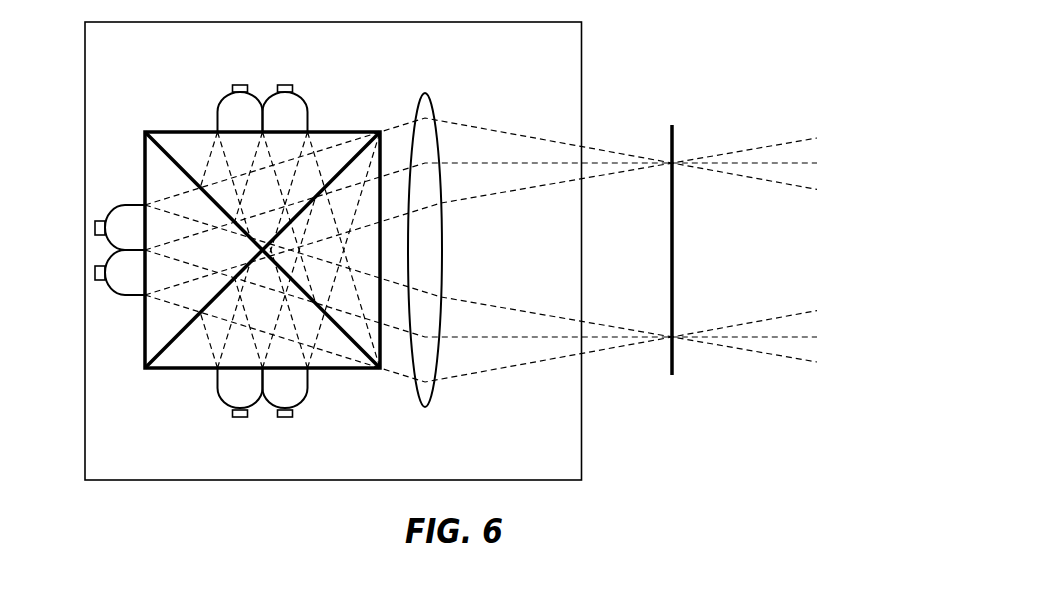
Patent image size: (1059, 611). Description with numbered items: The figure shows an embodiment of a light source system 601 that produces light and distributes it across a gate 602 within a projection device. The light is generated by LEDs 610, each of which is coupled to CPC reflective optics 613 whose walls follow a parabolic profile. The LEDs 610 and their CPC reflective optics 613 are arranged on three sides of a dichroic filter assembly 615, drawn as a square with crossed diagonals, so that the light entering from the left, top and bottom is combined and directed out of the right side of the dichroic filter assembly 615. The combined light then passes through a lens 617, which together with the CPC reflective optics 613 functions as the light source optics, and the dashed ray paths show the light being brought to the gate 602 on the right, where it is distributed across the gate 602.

The light source system 601 is at (333, 22).
The gate 602 is at (673, 248).
The LEDs 610 is at (95, 228).
The CPC reflective optics 613 is at (122, 205).
The dichroic filter assembly 615 is at (190, 129).
The lens 617 is at (431, 104).